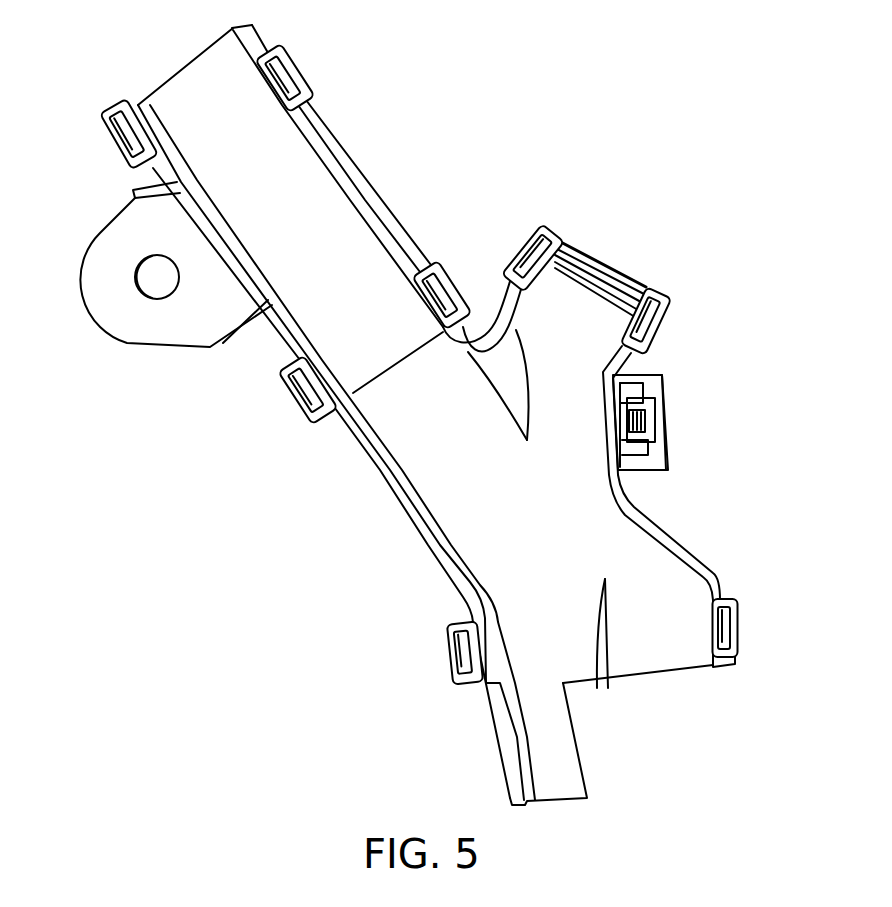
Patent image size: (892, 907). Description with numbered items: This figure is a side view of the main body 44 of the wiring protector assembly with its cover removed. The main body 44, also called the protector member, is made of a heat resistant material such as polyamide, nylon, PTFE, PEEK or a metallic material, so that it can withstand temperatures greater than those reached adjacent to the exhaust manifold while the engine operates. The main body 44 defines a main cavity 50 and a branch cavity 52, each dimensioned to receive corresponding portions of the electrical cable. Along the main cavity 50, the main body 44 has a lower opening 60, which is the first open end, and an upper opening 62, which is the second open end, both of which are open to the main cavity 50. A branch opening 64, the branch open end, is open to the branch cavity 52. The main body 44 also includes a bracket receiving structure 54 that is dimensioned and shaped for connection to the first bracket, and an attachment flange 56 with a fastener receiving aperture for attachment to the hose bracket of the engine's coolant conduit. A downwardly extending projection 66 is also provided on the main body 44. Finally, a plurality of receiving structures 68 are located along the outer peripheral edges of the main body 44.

The main body 44 is at (568, 96).
The main cavity 50 is at (351, 273).
The branch cavity 52 is at (578, 343).
The bracket receiving structure 54 is at (660, 455).
The attachment flange 56 is at (131, 316).
The lower opening 60 is at (653, 648).
The upper opening 62 is at (181, 72).
The branch opening 64 is at (587, 302).
The downwardly extending projection 66 is at (557, 783).
The receiving structures 68 is at (120, 144).